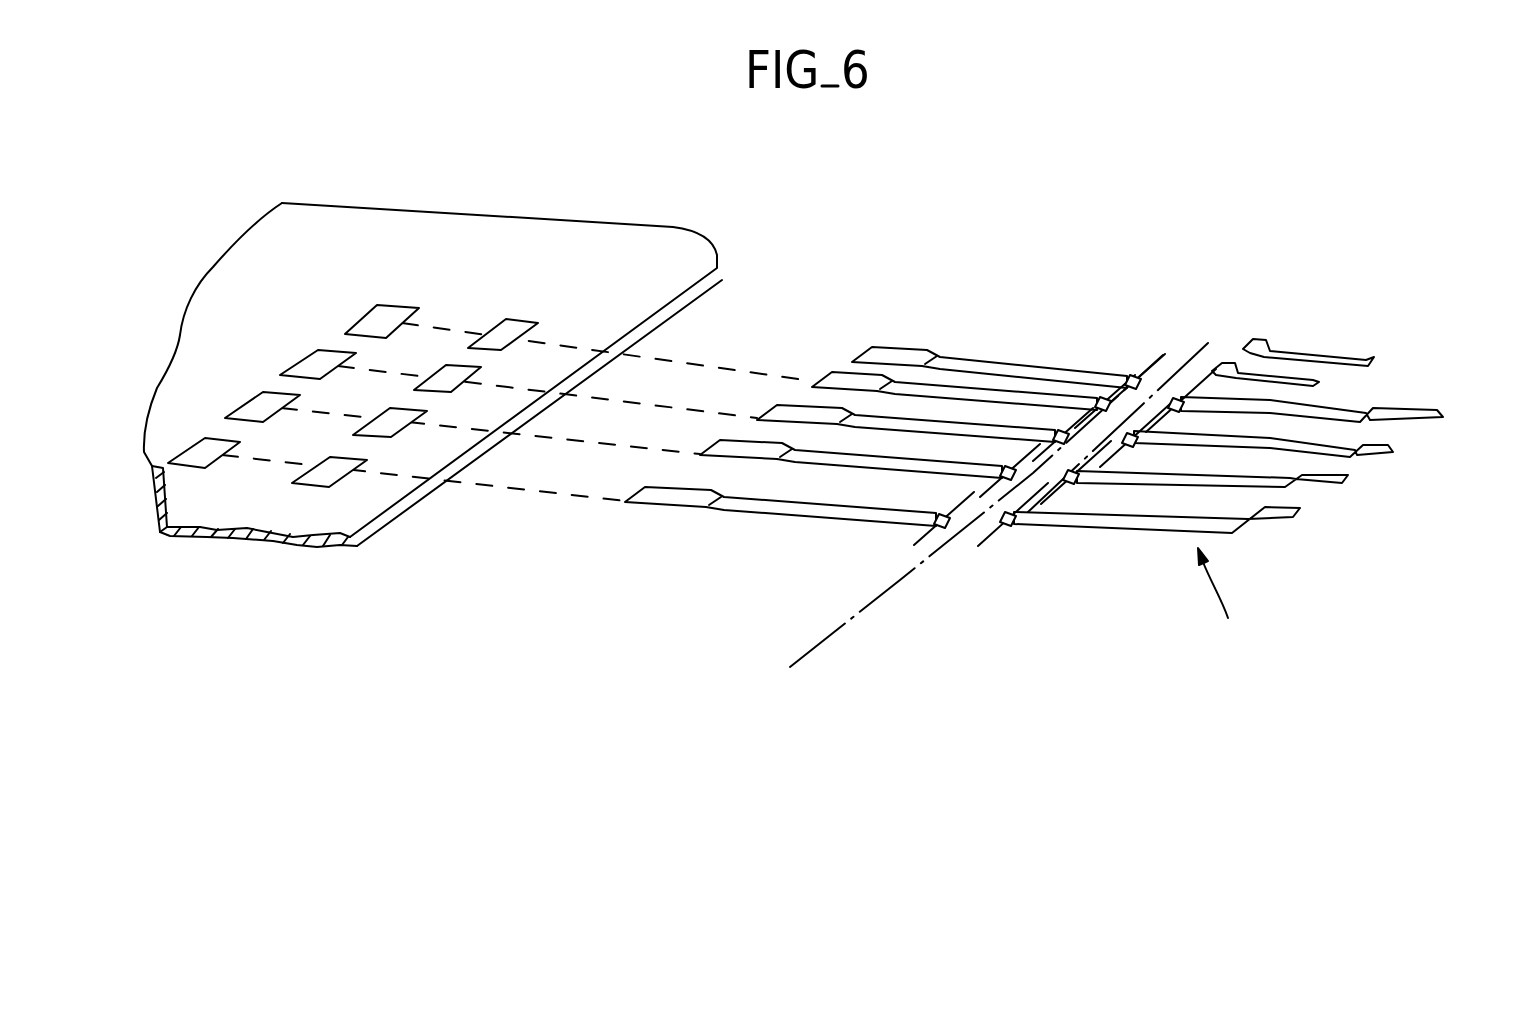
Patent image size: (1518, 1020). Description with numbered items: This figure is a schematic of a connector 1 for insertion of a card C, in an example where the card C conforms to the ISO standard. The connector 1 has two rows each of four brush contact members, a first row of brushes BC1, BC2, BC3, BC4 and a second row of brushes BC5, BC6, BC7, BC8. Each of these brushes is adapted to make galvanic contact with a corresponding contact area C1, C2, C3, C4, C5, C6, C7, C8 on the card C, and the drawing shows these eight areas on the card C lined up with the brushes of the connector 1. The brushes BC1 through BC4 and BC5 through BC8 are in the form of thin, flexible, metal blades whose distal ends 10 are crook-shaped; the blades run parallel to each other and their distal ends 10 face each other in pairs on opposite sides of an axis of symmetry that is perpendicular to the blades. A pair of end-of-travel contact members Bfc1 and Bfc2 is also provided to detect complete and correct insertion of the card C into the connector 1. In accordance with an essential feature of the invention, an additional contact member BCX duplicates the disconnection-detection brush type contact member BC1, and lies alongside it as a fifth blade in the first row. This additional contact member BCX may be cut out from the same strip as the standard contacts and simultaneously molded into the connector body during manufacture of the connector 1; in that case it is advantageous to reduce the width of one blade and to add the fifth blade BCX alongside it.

The card C is at (335, 508).
The contact area C1 is at (361, 319).
The contact area C2 is at (301, 362).
The contact area C3 is at (243, 405).
The contact area C4 is at (186, 450).
The contact area C5 is at (520, 319).
The contact area C6 is at (482, 369).
The contact area C7 is at (428, 412).
The contact area C8 is at (367, 462).
The connector 1 is at (1219, 598).
The distal ends 10 is at (1137, 377).
The additional contact member BCX is at (893, 349).
The brush contact member BC1 is at (834, 372).
The brush contact member BC2 is at (779, 405).
The brush contact member BC3 is at (728, 444).
The brush contact member BC4 is at (656, 488).
The brush contact member BC5 is at (1440, 415).
The brush contact member BC6 is at (1390, 448).
The brush contact member BC7 is at (1347, 478).
The brush contact member BC8 is at (1297, 513).
The end-of-travel contact member Bfc1 is at (1317, 382).
The end-of-travel contact member Bfc2 is at (1377, 357).